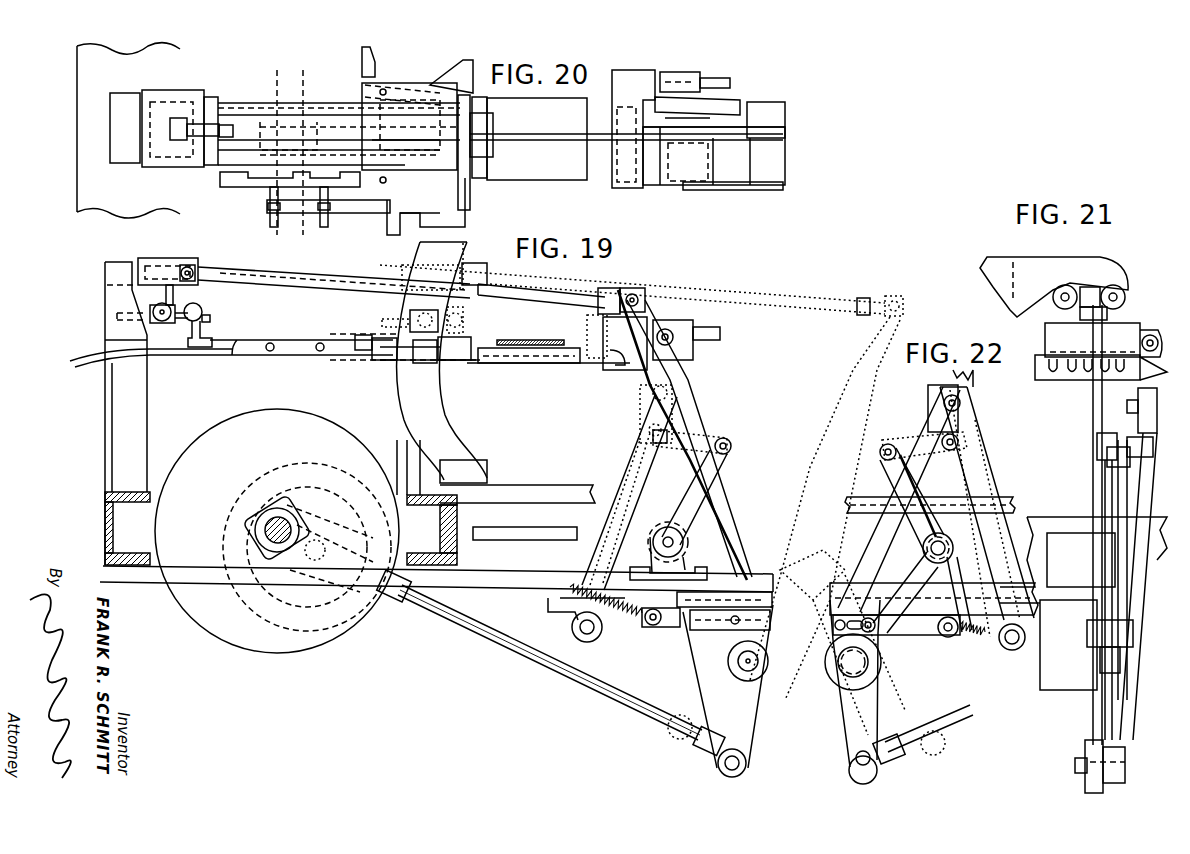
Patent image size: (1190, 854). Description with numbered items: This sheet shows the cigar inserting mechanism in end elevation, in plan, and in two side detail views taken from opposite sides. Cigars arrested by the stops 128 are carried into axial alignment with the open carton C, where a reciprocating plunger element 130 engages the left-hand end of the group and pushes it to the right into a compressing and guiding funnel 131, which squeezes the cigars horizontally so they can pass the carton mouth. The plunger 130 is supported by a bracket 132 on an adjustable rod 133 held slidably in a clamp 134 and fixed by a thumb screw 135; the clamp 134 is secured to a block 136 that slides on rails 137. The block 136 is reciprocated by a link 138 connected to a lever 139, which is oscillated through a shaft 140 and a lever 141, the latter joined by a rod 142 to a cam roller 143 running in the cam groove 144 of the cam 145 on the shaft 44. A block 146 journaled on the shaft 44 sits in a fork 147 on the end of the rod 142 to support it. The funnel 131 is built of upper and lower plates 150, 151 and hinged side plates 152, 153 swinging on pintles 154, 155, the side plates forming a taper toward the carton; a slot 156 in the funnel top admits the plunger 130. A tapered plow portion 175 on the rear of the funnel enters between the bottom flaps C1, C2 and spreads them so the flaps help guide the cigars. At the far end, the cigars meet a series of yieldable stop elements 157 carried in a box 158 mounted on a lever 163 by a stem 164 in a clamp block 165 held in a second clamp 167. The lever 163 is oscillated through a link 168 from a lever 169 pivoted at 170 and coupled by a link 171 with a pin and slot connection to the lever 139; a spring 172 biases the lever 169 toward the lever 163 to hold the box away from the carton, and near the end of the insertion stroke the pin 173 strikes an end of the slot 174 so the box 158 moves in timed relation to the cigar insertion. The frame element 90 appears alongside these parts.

In FIG. 19, the shaft 44 is at (282, 558).
In FIG. 20, the frame bar 90 is at (77, 185).
In FIG. 19, the frame bar 90 is at (300, 357).
In FIG. 20, the stops 128 is at (537, 145).
In FIG. 19, the reciprocating plunger element 130 is at (210, 338).
In FIG. 20, the compressing and guiding funnel 131 is at (362, 95).
In FIG. 19, the compressing and guiding funnel 131 is at (437, 365).
In FIG. 19, the bracket 132 is at (201, 309).
In FIG. 19, the adjustable rod 133 is at (128, 321).
In FIG. 19, the clamp 134 is at (172, 325).
In FIG. 19, the thumb screw 135 is at (163, 323).
In FIG. 20, the block 136 is at (203, 93).
In FIG. 20, the rails 137 is at (250, 150).
In FIG. 19, the rails 137 is at (277, 270).
In FIG. 21, the rails 137 is at (1063, 302).
In FIG. 19, the link 138 is at (543, 300).
In FIG. 20, the lever 139 is at (667, 142).
In FIG. 19, the lever 139 is at (643, 372).
In FIG. 22, the lever 139 is at (890, 547).
In FIG. 21, the lever 139 is at (1093, 420).
In FIG. 19, the shaft 140 is at (768, 664).
In FIG. 22, the shaft 140 is at (825, 672).
In FIG. 19, the lever 141 is at (760, 708).
In FIG. 22, the lever 141 is at (840, 713).
In FIG. 21, the lever 141 is at (1088, 725).
In FIG. 19, the rod 142 is at (587, 697).
In FIG. 19, the cam roller 143 is at (372, 568).
In FIG. 19, the cam groove 144 is at (350, 586).
In FIG. 19, the cam 145 is at (335, 586).
In FIG. 19, the block 146 is at (290, 562).
In FIG. 19, the fork 147 is at (300, 565).
In FIG. 19, the upper plate 150 is at (367, 337).
In FIG. 19, the lower plate 151 is at (370, 360).
In FIG. 20, the hinged side plate 152 is at (440, 95).
In FIG. 20, the hinged side plate 153 is at (430, 175).
In FIG. 20, the pintle 154 is at (384, 90).
In FIG. 20, the pintle 155 is at (380, 182).
In FIG. 20, the slot 156 is at (390, 142).
In FIG. 19, the stop elements 157 is at (613, 357).
In FIG. 21, the stop elements 157 is at (1090, 378).
In FIG. 20, the box 158 is at (628, 188).
In FIG. 21, the box 158 is at (1120, 325).
In FIG. 19, the lever 163 is at (637, 450).
In FIG. 22, the lever 163 is at (972, 455).
In FIG. 21, the lever 163 is at (1140, 425).
In FIG. 20, the stem 164 is at (715, 78).
In FIG. 20, the clamp block 165 is at (690, 67).
In FIG. 19, the second clamp 167 is at (653, 400).
In FIG. 19, the link 168 is at (715, 436).
In FIG. 22, the link 168 is at (918, 437).
In FIG. 19, the lever 169 is at (720, 470).
In FIG. 22, the lever 169 is at (888, 478).
In FIG. 21, the lever 169 is at (1105, 500).
In FIG. 19, the pivot 170 is at (683, 540).
In FIG. 22, the pivot 170 is at (923, 545).
In FIG. 19, the link 171 is at (682, 628).
In FIG. 22, the link 171 is at (917, 635).
In FIG. 19, the spring 172 is at (622, 618).
In FIG. 22, the spring 172 is at (972, 636).
In FIG. 22, the pin 173 is at (903, 637).
In FIG. 22, the slot 174 is at (840, 633).
In FIG. 20, the tapered plow portion 175 is at (467, 74).
In FIG. 19, the carton C is at (490, 345).
In FIG. 19, the bottom flap C1 is at (463, 340).
In FIG. 19, the bottom flap C2 is at (462, 362).